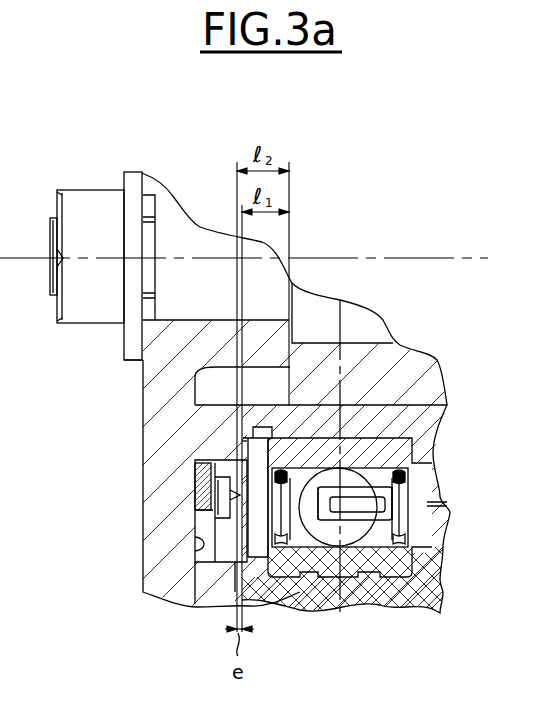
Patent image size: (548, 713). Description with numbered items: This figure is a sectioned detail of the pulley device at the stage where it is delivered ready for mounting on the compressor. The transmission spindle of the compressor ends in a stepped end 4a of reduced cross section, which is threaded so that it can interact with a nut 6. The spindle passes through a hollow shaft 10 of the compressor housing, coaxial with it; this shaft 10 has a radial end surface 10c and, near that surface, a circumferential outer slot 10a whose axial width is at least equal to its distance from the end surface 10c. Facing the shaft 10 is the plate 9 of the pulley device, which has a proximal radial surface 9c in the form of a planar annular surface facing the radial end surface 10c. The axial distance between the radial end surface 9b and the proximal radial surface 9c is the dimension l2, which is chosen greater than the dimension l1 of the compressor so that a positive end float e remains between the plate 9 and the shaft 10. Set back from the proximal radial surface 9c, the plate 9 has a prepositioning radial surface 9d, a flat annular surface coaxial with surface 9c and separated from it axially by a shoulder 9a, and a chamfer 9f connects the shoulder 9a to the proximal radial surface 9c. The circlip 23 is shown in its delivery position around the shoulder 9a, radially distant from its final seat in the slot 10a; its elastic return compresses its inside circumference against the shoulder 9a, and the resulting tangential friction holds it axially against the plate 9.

The nut 6 is at (57, 309).
The stepped end 4a is at (177, 298).
The plate 9 is at (157, 362).
The shoulder 9a is at (194, 483).
The radial end surface 9b is at (290, 357).
The proximal radial surface 9c is at (245, 406).
The prepositioning radial surface 9d is at (198, 550).
The chamfer 9f is at (230, 463).
The hollow shaft of the housing 10 is at (365, 418).
The circumferential outer slot 10a is at (262, 420).
The radial end surface 10c is at (248, 422).
The circlip 23 is at (242, 441).